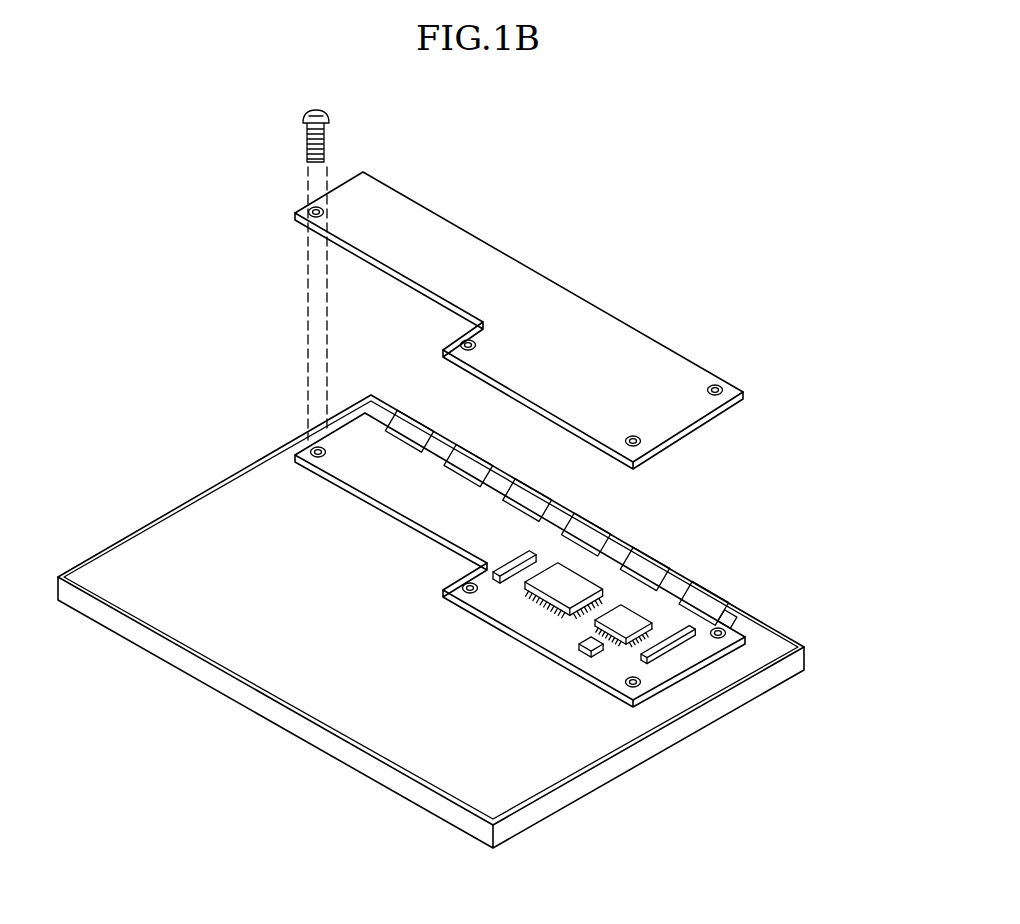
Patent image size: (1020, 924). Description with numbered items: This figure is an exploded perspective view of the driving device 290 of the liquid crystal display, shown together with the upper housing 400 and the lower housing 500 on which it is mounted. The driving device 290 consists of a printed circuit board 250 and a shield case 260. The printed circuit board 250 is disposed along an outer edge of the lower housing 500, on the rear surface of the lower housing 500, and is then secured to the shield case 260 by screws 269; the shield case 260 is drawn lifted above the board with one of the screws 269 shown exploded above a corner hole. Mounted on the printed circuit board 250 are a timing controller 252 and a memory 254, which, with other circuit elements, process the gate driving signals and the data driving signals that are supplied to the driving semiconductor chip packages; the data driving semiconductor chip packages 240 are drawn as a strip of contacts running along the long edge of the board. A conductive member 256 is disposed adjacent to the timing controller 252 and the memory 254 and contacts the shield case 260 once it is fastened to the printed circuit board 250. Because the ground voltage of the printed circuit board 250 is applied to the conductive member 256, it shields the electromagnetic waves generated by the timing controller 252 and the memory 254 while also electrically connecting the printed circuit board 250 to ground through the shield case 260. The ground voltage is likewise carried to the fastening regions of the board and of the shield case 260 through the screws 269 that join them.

The screws 269 is at (330, 115).
The driving device 290 is at (113, 302).
The shield case 260 is at (451, 320).
The printed circuit board 250 is at (469, 540).
The timing controller 252 is at (567, 580).
The memory 254 is at (627, 618).
The conductive member 256 is at (647, 660).
The data driving semiconductor chip packages 240 is at (648, 568).
The upper housing 400 is at (805, 657).
The lower housing 500 is at (548, 768).